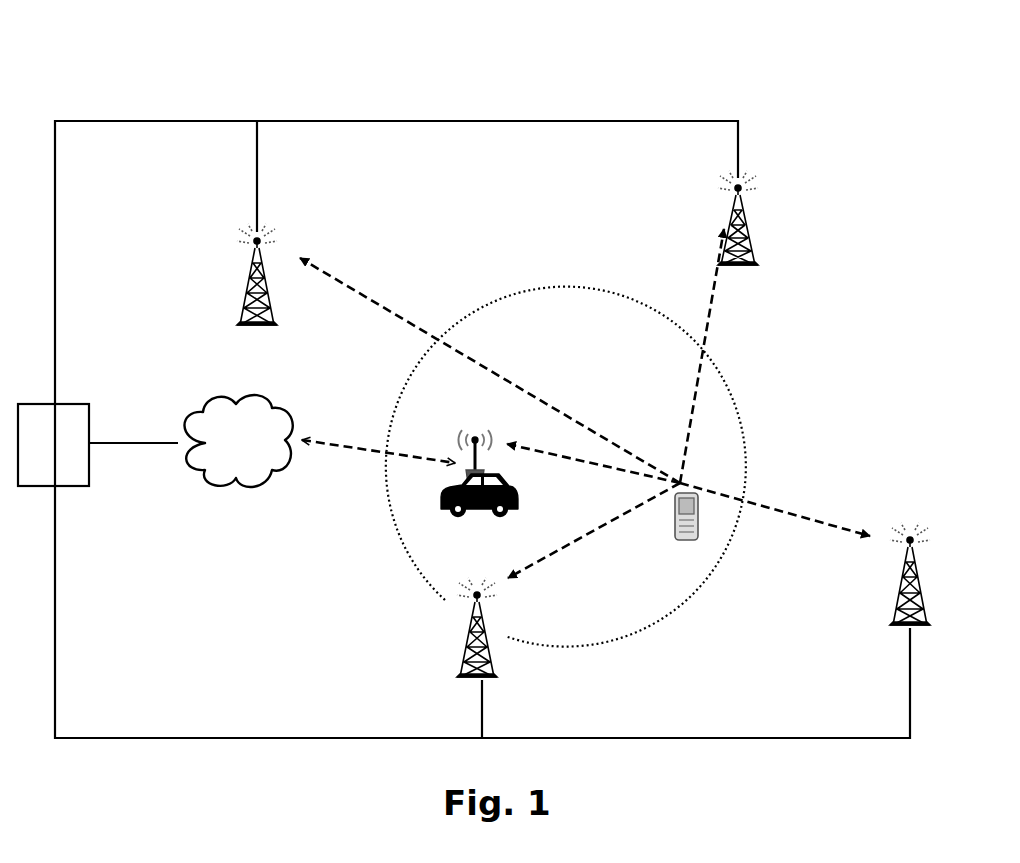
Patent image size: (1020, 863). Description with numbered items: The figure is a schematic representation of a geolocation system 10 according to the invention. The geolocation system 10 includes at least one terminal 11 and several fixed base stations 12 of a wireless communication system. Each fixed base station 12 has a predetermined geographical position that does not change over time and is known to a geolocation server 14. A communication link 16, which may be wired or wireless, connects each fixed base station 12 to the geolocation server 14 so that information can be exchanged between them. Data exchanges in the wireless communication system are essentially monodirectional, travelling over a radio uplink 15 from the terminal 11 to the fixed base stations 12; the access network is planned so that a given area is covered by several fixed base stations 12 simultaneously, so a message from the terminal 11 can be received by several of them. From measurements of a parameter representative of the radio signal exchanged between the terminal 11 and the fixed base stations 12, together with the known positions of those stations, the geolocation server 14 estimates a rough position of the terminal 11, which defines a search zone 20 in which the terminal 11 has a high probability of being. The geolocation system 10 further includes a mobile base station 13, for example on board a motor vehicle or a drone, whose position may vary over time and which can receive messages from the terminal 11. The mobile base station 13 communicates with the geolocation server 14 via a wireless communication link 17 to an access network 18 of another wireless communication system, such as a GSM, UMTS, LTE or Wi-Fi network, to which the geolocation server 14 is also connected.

The geolocation system 10 is at (193, 68).
The terminal 11 is at (668, 545).
The fixed base station 12 is at (240, 296).
The mobile base station 13 is at (456, 430).
The geolocation server 14 is at (92, 478).
The radio uplink 15 is at (573, 460).
The communication link 16 is at (493, 121).
The wireless communication link 17 is at (358, 450).
The access network 18 is at (238, 490).
The search zone 20 is at (508, 297).